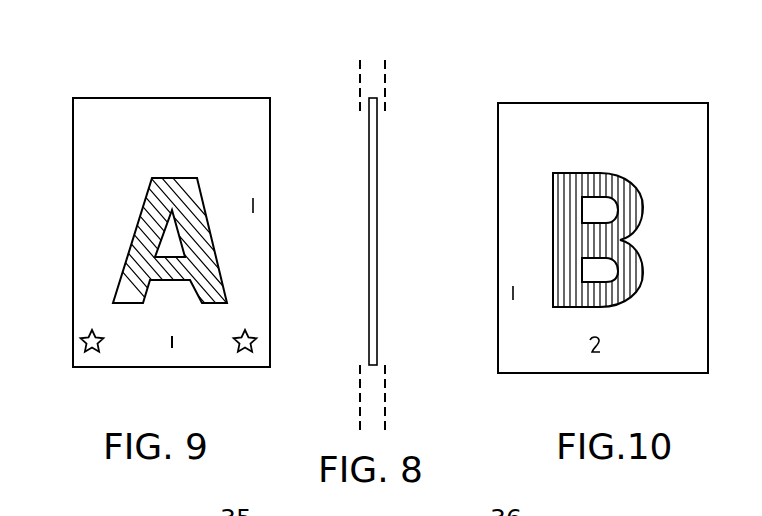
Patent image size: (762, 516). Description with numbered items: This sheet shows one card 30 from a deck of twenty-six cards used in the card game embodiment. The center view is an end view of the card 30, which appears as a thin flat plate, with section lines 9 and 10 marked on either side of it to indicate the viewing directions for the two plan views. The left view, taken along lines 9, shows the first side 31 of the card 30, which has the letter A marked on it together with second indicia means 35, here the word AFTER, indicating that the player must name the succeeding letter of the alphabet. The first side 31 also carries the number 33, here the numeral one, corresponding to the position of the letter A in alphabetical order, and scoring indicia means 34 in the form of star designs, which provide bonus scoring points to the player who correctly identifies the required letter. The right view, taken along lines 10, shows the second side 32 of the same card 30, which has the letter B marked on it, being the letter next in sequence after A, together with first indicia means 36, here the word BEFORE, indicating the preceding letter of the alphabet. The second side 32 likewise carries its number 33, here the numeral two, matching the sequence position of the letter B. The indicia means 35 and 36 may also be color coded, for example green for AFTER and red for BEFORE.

In FIG. 8, the card 30 is at (393, 318).
In FIG. 9, the first side 31 is at (253, 205).
In FIG. 8, the first side 31 is at (369, 253).
In FIG. 8, the second side 32 is at (377, 228).
In FIG. 10, the second side 32 is at (513, 293).
In FIG. 9, the number 33 is at (176, 343).
In FIG. 10, the number 33 is at (597, 353).
In FIG. 9, the scoring indicia means 34 is at (88, 355).
In FIG. 9, the second indicia means 35 is at (133, 130).
In FIG. 10, the first indicia means 36 is at (550, 133).
In FIG. 8, the section line 9— 9 is at (358, 420).
In FIG. 8, the section line 10— 10 is at (387, 420).